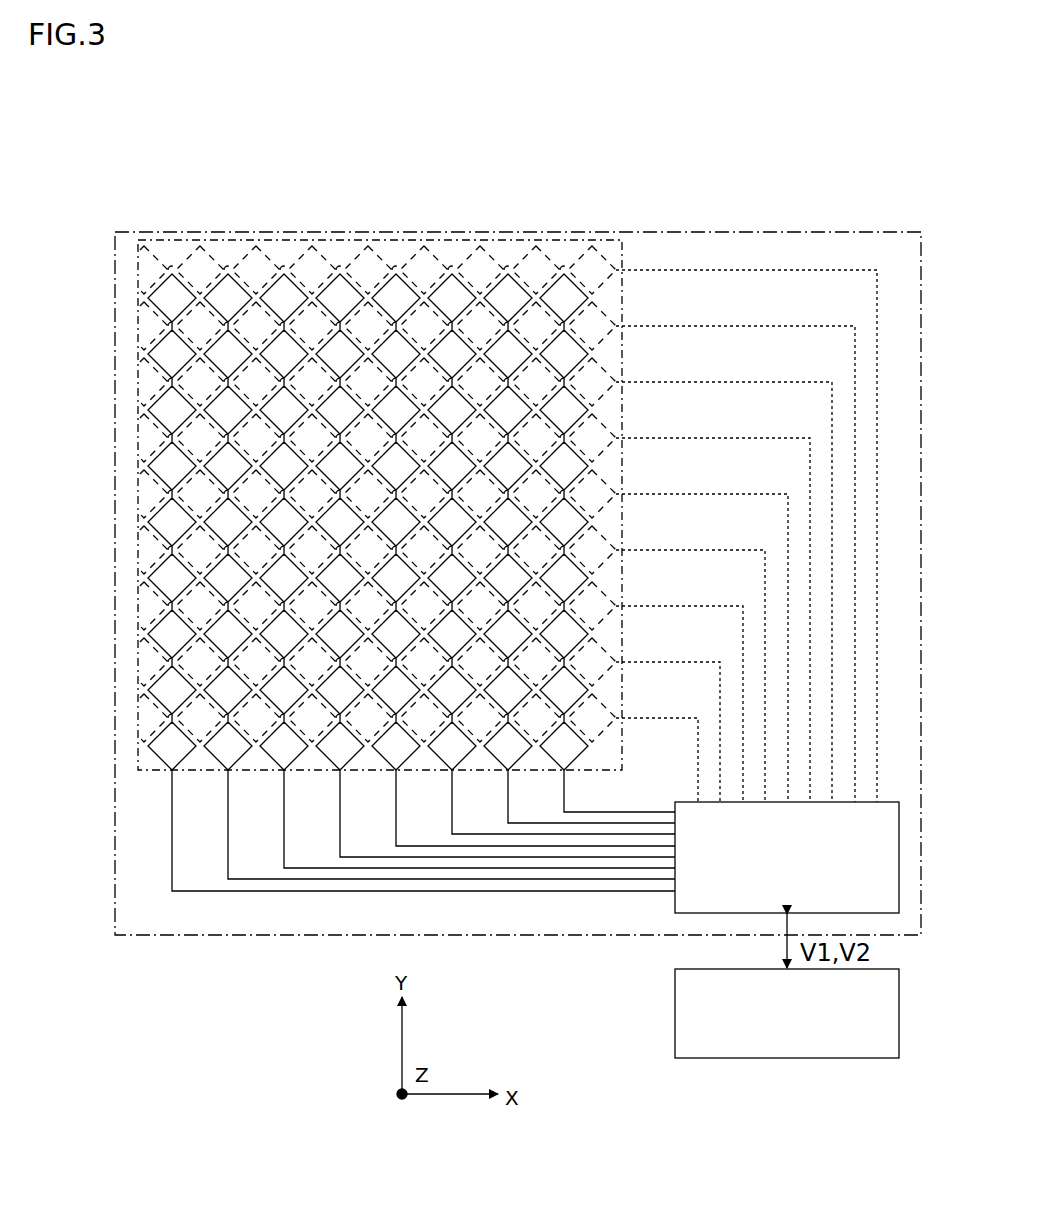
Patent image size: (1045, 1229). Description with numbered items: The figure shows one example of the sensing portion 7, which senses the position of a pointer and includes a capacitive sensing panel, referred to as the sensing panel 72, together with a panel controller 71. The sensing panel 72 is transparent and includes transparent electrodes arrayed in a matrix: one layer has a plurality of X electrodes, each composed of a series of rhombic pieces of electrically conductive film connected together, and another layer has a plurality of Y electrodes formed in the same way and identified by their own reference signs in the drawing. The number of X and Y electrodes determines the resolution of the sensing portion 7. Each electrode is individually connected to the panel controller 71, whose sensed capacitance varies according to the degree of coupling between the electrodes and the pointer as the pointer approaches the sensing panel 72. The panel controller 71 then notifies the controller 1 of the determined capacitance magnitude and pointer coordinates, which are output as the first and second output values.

The sensing portion 7 is at (115, 230).
The sensing panel 72 is at (138, 772).
The panel controller 71 is at (689, 893).
The controller 1 is at (888, 1013).